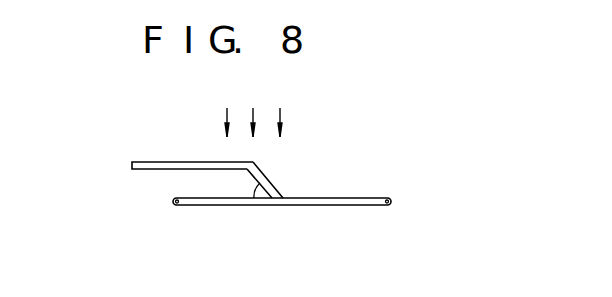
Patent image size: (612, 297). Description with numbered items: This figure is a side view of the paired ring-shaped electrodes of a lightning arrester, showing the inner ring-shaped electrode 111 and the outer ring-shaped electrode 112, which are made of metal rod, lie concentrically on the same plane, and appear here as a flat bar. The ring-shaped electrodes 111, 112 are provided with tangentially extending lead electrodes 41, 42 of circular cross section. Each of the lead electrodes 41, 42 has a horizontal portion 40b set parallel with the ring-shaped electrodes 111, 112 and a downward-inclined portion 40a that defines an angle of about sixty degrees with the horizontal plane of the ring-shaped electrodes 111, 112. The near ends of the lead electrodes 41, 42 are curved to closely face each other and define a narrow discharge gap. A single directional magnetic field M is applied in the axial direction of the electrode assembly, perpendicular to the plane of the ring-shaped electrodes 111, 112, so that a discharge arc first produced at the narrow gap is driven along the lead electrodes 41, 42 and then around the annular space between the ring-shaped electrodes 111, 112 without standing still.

The downward-inclined portion 40a is at (277, 187).
The horizontal portion 40b is at (147, 162).
The lead electrode 41 is at (210, 170).
The lead electrode 42 is at (210, 170).
The inner ring-shaped electrode 111 is at (362, 205).
The outer ring-shaped electrode 112 is at (305, 229).
The single directional magnetic field M is at (227, 121).